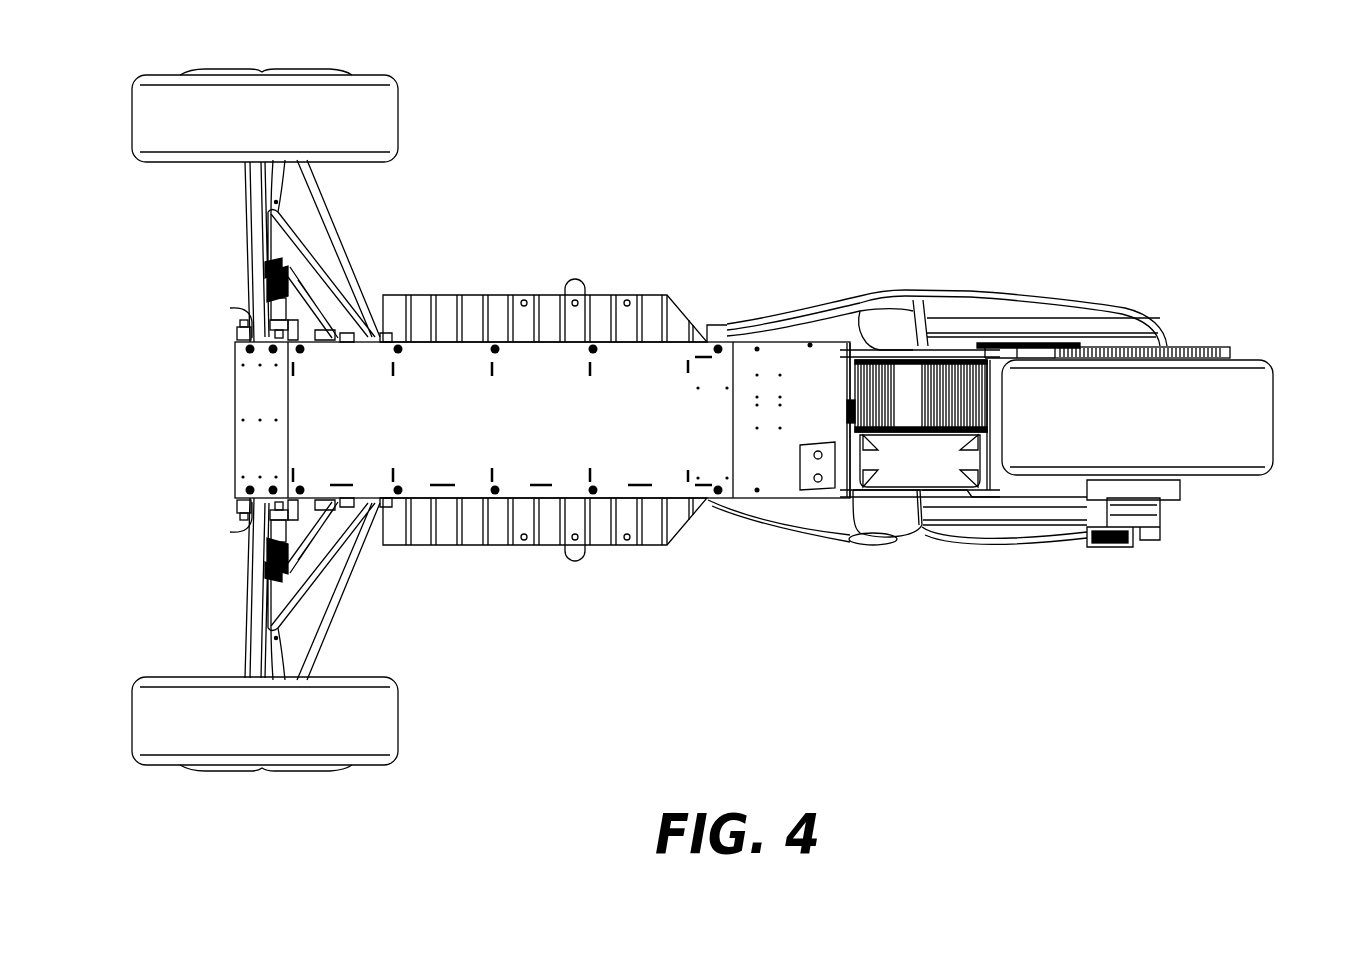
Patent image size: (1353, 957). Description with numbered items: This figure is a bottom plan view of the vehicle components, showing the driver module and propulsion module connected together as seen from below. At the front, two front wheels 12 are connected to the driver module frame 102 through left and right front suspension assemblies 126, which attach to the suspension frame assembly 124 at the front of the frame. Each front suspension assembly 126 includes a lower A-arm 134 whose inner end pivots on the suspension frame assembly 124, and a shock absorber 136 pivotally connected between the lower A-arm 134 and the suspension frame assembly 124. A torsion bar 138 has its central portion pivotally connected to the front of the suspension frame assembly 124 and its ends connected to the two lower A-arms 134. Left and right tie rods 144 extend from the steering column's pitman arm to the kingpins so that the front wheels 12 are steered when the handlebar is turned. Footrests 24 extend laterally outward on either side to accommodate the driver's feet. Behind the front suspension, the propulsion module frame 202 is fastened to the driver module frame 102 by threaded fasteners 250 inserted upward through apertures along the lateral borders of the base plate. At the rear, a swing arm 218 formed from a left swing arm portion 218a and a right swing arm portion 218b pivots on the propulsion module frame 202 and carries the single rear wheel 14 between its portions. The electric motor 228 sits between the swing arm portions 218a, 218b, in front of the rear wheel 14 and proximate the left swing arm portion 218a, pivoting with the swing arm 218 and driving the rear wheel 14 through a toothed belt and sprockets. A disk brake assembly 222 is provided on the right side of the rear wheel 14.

The front wheel 12 is at (380, 110).
The rear wheel 14 is at (1265, 425).
The footrest 24 is at (605, 300).
The driver module frame 102 is at (472, 421).
The suspension frame assembly 124 is at (258, 400).
The front suspension assembly 126 is at (243, 420).
The lower A-arm 134 is at (255, 190).
The shock absorber 136 is at (270, 295).
The torsion bar 138 is at (240, 323).
The tie rod 144 is at (305, 190).
The propulsion module frame 202 is at (770, 340).
The swing arm 218 is at (937, 457).
The left swing arm portion 218a is at (1003, 313).
The right swing arm portion 218b is at (952, 532).
The disk brake assembly 222 is at (1185, 548).
The electric motor 228 is at (955, 352).
The threaded fastener 250 is at (400, 344).